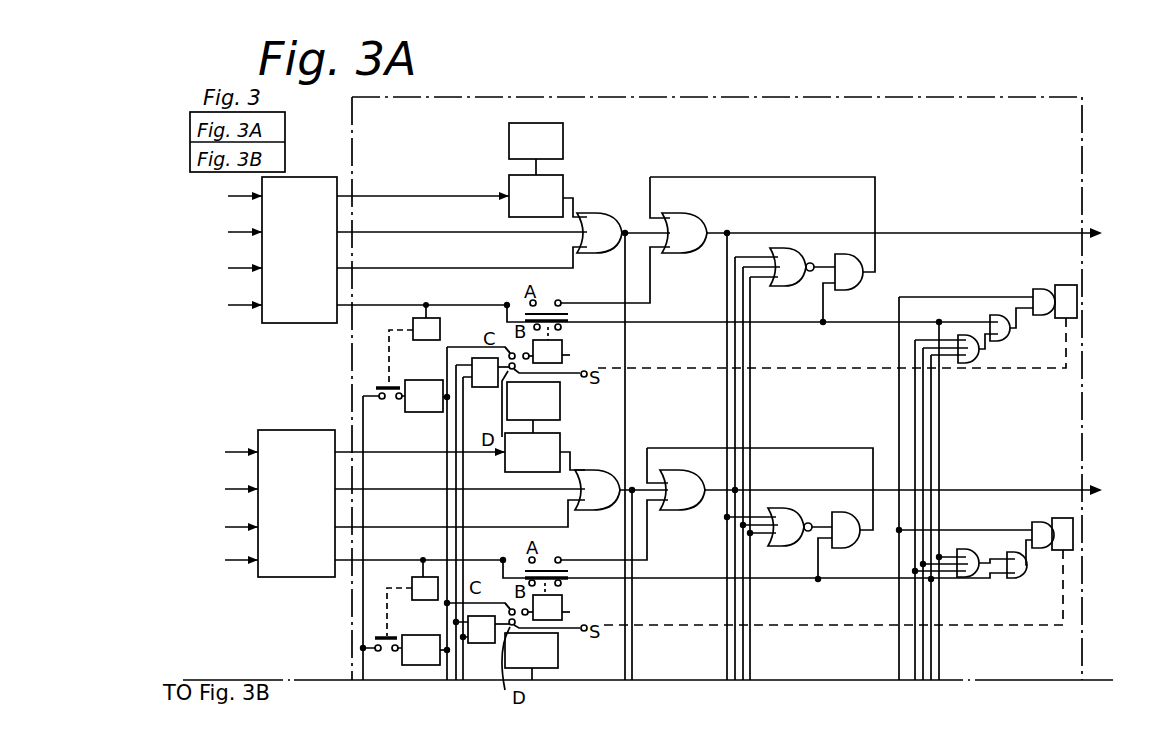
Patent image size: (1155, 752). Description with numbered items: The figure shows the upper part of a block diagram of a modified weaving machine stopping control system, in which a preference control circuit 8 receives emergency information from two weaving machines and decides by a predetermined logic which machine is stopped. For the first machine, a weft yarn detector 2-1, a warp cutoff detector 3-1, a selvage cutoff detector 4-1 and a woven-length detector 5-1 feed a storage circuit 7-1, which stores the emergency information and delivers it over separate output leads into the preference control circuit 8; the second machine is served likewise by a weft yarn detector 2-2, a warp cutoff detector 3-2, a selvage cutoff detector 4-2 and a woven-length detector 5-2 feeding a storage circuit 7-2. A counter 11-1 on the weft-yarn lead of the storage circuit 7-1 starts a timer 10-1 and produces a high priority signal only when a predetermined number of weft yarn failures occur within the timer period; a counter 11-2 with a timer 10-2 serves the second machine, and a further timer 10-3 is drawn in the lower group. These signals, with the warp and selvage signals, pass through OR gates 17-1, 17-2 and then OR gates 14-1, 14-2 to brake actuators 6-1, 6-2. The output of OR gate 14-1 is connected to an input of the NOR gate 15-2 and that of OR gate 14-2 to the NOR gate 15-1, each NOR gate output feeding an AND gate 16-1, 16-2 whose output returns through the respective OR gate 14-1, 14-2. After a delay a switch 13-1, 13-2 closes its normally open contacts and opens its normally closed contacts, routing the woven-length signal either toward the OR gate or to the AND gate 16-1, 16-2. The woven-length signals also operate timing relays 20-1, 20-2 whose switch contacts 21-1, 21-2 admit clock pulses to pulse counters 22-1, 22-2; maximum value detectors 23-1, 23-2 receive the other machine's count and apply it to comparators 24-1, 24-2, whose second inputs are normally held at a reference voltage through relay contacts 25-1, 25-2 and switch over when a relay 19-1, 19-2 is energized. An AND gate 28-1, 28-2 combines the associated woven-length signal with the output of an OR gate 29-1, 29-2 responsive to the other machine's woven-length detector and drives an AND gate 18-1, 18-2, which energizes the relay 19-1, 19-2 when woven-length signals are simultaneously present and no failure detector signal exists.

The preference control circuit 8 is at (856, 95).
The storage circuit 7-1 is at (299, 250).
The storage circuit 7-2 is at (296, 503).
The weft yarn detector 2-1 is at (222, 197).
The warp cutoff detector 3-1 is at (222, 233).
The selvage cutoff detector 4-1 is at (222, 269).
The woven-length detector 5-1 is at (222, 306).
The weft yarn detector 2-2 is at (216, 453).
The warp cutoff detector 3-2 is at (216, 490).
The selvage cutoff detector 4-2 is at (216, 528).
The woven-length detector 5-2 is at (216, 561).
The brake actuator 6-1 is at (904, 223).
The brake actuator 6-2 is at (903, 480).
The timer 10-1 is at (563, 133).
The timer 10-2 is at (560, 401).
The timer 10-3 is at (558, 662).
The counter 11-1 is at (563, 183).
The counter 11-2 is at (560, 441).
The switch 13-1 is at (573, 344).
The switch 13-2 is at (574, 601).
The OR gate 14-1 is at (687, 253).
The OR gate 14-2 is at (685, 510).
The NOR gate 15-1 is at (786, 286).
The NOR gate 15-2 is at (784, 546).
The AND gate 16-1 is at (852, 290).
The AND gate 16-2 is at (849, 548).
The OR gate 17-1 is at (598, 215).
The OR gate 17-2 is at (601, 479).
The AND gate 18-1 is at (1042, 289).
The AND gate 18-2 is at (1037, 522).
The relay 19-1 is at (1070, 285).
The relay 19-2 is at (1068, 518).
The timing relay 20-1 is at (426, 340).
The timing relay 20-2 is at (425, 600).
The switch contacts 21-1 is at (387, 408).
The switch contacts 21-2 is at (385, 659).
The pulse counter 22-1 is at (424, 412).
The pulse counter 22-2 is at (422, 665).
The maximum value detector 23-1 is at (485, 387).
The maximum value detector 23-2 is at (480, 643).
The comparator 24-1 is at (562, 355).
The comparator 24-2 is at (562, 612).
The relay contacts 25-1 is at (511, 346).
The relay contacts 25-2 is at (510, 605).
The AND gate 28-1 is at (1004, 341).
The AND gate 28-2 is at (1016, 578).
The OR gate 29-1 is at (968, 363).
The OR gate 29-2 is at (964, 577).